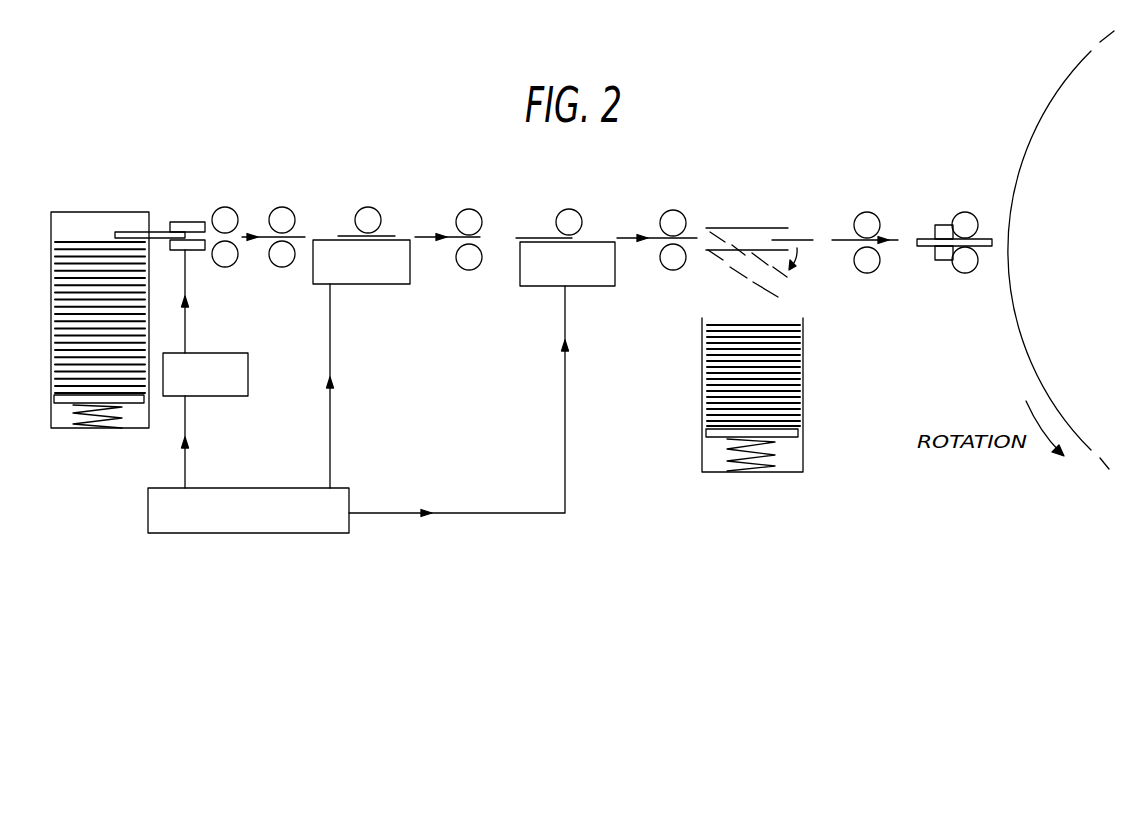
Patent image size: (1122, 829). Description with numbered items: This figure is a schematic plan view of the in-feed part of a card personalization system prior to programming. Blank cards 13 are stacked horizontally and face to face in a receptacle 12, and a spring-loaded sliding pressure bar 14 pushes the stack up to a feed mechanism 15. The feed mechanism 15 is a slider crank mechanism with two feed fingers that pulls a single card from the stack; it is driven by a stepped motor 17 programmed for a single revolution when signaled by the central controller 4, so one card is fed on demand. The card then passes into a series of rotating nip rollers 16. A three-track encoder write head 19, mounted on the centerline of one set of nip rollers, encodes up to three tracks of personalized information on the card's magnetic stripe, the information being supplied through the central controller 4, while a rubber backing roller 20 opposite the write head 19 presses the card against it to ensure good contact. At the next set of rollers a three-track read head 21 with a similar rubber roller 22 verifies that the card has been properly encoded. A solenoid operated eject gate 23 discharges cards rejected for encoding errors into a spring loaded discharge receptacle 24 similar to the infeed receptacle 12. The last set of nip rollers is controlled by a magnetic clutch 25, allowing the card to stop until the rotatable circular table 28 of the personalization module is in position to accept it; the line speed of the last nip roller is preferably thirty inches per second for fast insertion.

The central controller 4 is at (250, 488).
The receptacle 12 is at (51, 342).
The blank cards 13 is at (65, 286).
The spring-loaded sliding pressure bar 14 is at (65, 401).
The feed mechanism 15 is at (188, 221).
The rotating nip rollers 16 is at (279, 207).
The stepped motor 17 is at (248, 356).
The three-track encoder write head 19 is at (372, 285).
The rubber backing roller 20 is at (368, 207).
The three-track read head 21 is at (542, 287).
The rubber roller 22 is at (572, 208).
The solenoid operated eject gate 23 is at (750, 227).
The spring loaded discharge receptacle 24 is at (803, 385).
The magnetic clutch 25 is at (944, 224).
The circular table 28 is at (1017, 326).